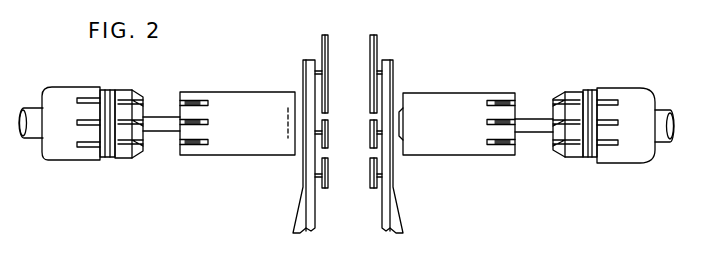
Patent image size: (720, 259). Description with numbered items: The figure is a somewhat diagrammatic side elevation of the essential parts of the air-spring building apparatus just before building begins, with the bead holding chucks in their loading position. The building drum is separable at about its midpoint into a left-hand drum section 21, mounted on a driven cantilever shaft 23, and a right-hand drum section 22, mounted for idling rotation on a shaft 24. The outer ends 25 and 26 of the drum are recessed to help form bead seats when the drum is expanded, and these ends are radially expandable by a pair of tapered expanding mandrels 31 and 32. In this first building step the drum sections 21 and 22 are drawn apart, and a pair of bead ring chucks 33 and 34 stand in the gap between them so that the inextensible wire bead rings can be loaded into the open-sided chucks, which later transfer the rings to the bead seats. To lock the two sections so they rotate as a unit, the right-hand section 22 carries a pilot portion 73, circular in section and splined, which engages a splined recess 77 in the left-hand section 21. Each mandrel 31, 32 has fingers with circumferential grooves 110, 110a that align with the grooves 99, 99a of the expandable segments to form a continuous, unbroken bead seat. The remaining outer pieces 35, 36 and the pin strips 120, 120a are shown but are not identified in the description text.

The left-hand drum section 21 is at (232, 102).
The right-hand drum section 22 is at (450, 102).
The driven cantilever shaft 23 is at (153, 122).
The idling shaft 24 is at (530, 122).
The outer drum end 25 is at (195, 156).
The outer drum end 26 is at (502, 156).
The tapered expanding mandrel 31 is at (121, 166).
The tapered expanding mandrel 32 is at (573, 166).
The bead ring chuck 33 is at (303, 184).
The bead ring chuck 34 is at (394, 184).
The first cable connector body 35 is at (81, 166).
The second cable connector body 36 is at (628, 168).
The pilot portion 73 is at (399, 110).
The splined recess 77 is at (288, 120).
The segment groove 99 is at (510, 125).
The segment groove 99a is at (205, 143).
The circumferential finger groove 110 is at (557, 160).
The circumferential finger groove 110a is at (138, 157).
The second pin strip 120 is at (372, 190).
The first pin strip 120a is at (329, 189).